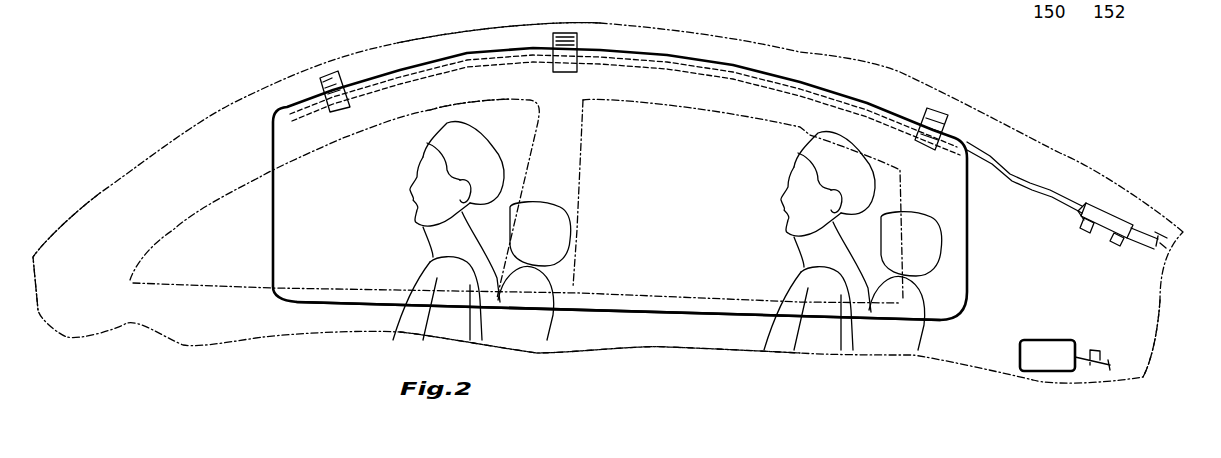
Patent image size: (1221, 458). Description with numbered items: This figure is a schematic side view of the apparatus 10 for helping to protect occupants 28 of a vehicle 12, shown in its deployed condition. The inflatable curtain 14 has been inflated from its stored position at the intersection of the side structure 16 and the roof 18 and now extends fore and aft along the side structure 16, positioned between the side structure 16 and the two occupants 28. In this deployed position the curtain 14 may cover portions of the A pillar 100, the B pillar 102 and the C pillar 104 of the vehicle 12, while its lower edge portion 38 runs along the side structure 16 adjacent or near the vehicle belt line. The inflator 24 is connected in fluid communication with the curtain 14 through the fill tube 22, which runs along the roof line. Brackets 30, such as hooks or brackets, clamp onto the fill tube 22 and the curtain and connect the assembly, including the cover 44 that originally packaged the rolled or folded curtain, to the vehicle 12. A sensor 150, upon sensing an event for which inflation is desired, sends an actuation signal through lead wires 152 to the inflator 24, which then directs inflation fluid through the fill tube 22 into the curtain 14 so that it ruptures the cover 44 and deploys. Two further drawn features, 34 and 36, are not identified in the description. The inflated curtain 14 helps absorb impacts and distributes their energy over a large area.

The apparatus 10 is at (330, 33).
The vehicle 12 is at (235, 100).
The inflatable curtain 14 is at (620, 263).
The side structure 16 is at (600, 327).
The roof 18 is at (693, 33).
The fill tube 22 is at (1045, 190).
The inflator 24 is at (1118, 218).
The occupants 28 is at (380, 207).
The brackets 30 is at (327, 77).
The roof rail 34 is at (803, 82).
The beltline 36 is at (253, 290).
The lower edge portion 38 is at (680, 307).
The cover 44 is at (453, 90).
The A pillar 100 is at (140, 193).
The B pillar 102 is at (578, 179).
The C pillar 104 is at (1153, 337).
The sensor 150 is at (1043, 358).
The lead wires 152 is at (1178, 184).